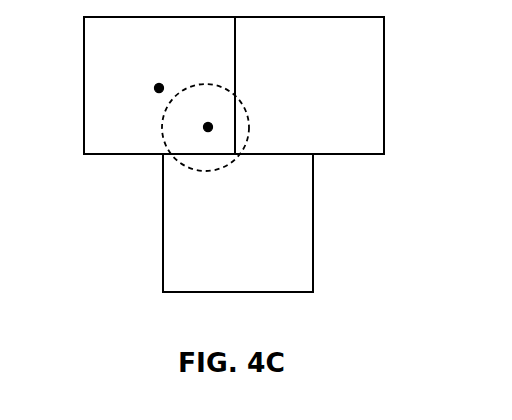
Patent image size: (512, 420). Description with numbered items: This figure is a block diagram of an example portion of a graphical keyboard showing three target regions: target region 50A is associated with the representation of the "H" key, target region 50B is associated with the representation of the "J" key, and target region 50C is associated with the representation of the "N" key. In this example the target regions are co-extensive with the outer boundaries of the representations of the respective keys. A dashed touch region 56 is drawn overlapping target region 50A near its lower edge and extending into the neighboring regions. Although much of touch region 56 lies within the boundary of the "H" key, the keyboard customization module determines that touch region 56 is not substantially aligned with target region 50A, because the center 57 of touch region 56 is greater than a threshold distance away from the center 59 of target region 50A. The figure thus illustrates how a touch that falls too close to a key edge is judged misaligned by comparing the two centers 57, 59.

The target region 50A is at (84, 108).
The target region 50B is at (384, 88).
The target region 50C is at (313, 218).
The touch region 56 is at (223, 84).
The center of touch region 57 is at (205, 131).
The center of target region 59 is at (157, 78).